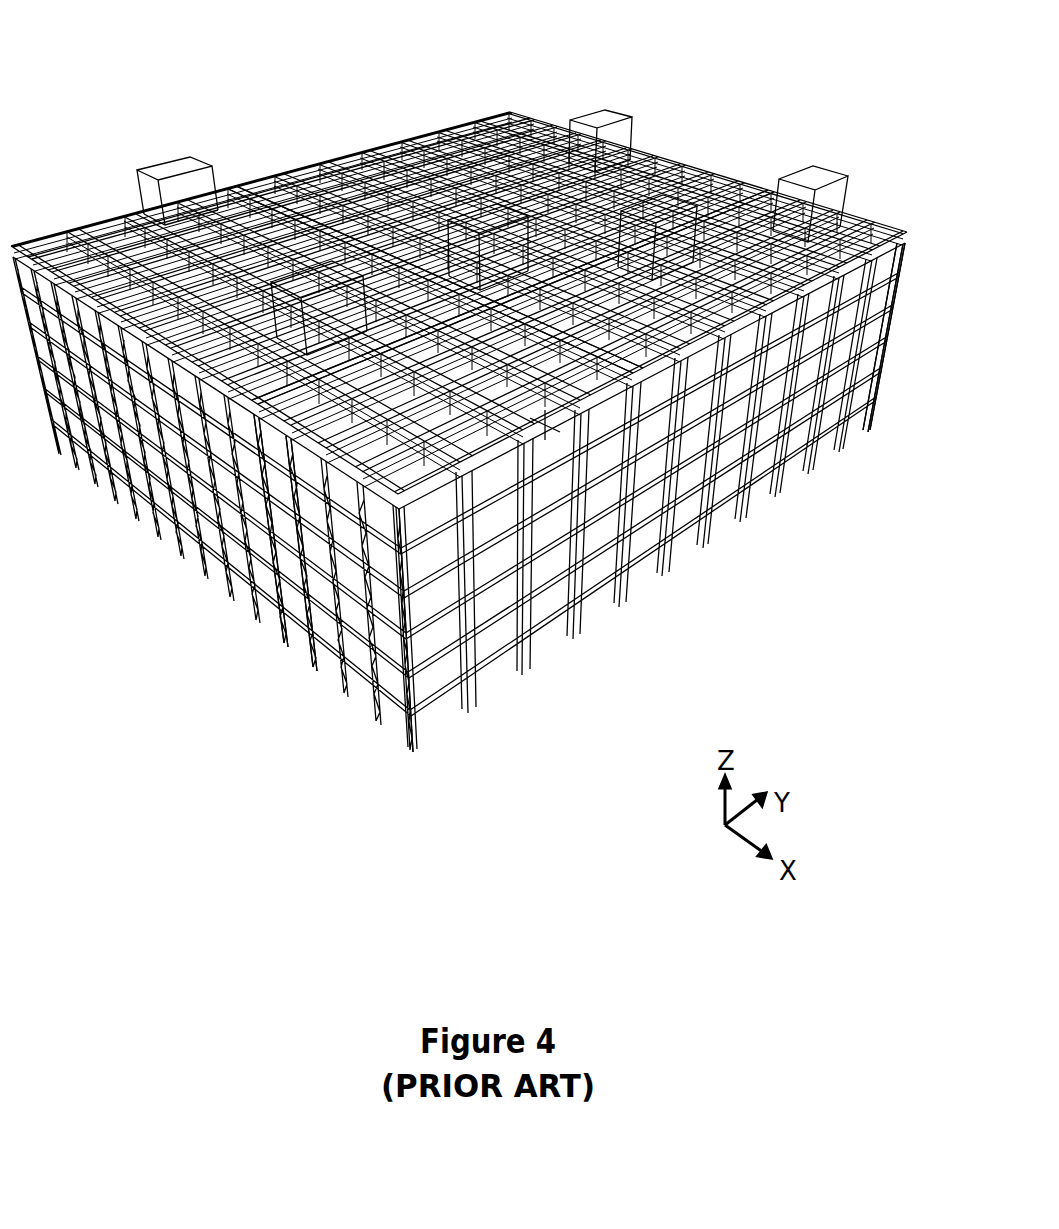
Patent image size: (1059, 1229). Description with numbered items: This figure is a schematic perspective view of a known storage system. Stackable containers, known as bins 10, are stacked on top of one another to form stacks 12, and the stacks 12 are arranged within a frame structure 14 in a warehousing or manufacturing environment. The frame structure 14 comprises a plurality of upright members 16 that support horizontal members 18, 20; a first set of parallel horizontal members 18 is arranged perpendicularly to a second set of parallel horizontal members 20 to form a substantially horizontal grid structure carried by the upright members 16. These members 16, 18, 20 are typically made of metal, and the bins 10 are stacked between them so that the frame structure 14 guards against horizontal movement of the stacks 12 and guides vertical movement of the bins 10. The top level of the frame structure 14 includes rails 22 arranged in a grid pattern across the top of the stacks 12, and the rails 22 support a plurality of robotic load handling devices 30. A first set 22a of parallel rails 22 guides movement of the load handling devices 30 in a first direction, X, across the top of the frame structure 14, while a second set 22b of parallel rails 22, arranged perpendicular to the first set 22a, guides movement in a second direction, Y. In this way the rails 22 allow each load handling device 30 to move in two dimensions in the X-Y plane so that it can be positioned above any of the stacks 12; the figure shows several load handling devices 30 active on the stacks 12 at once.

The bins 10 is at (437, 632).
The stacks 12 is at (757, 490).
The frame structure 14 is at (876, 216).
The upright members 16 is at (325, 630).
The first set of parallel horizontal members 18 is at (548, 420).
The second set of parallel horizontal members 20 is at (305, 414).
The rails 22 is at (101, 243).
The first set of parallel rails 22a is at (243, 362).
The second set of parallel rails 22b is at (322, 225).
The robotic load handling devices 30 is at (625, 137).